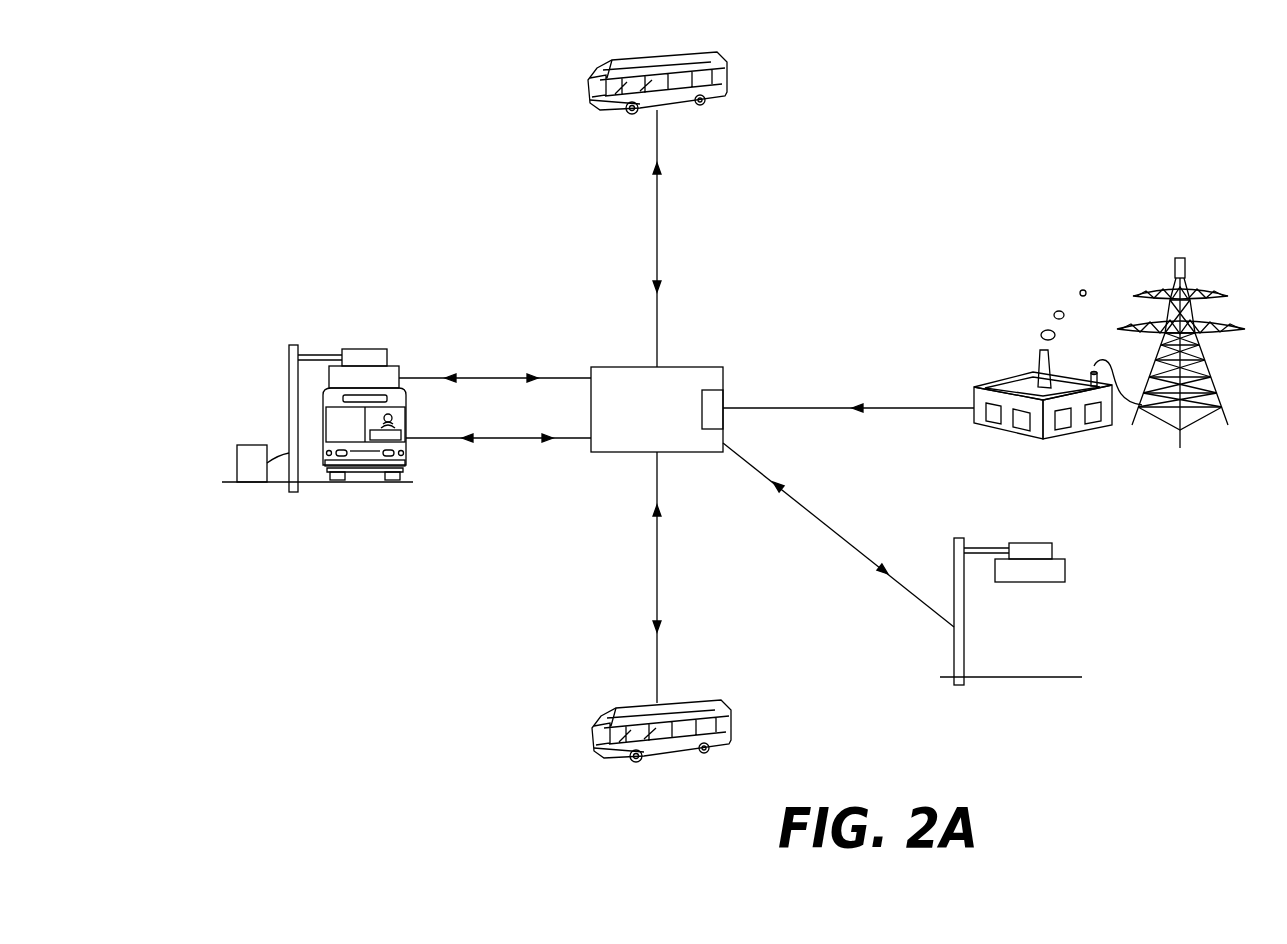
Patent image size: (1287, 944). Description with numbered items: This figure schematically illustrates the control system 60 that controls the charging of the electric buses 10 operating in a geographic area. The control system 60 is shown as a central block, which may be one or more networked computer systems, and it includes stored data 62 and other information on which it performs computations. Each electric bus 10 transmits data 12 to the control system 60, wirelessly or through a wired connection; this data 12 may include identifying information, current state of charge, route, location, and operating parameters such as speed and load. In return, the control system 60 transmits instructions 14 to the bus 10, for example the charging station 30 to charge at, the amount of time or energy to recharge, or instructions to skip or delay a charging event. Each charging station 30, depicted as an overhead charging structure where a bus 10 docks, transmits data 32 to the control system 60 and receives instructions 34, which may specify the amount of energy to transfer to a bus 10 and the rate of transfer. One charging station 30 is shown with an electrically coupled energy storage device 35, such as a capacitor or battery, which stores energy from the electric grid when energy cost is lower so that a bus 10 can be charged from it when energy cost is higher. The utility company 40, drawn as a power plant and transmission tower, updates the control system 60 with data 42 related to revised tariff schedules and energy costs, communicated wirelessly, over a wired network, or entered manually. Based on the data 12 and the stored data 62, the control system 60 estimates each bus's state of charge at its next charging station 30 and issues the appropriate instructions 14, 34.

The bus 10 is at (715, 63).
The data 12 is at (660, 294).
The instructions 14 is at (660, 163).
The charging station 30 is at (341, 338).
The data 32 is at (538, 375).
The instructions 34 is at (445, 375).
The energy storage device 35 is at (246, 445).
The utility company 40 is at (1012, 338).
The data 42 is at (852, 405).
The control system 60 is at (647, 413).
The stored data 62 is at (713, 398).